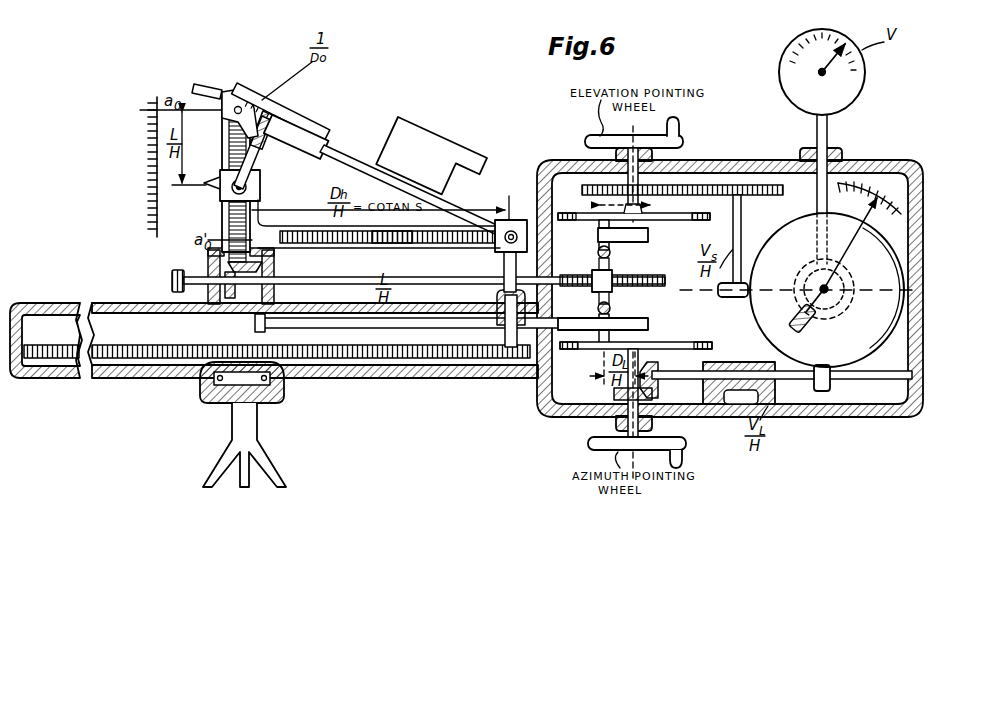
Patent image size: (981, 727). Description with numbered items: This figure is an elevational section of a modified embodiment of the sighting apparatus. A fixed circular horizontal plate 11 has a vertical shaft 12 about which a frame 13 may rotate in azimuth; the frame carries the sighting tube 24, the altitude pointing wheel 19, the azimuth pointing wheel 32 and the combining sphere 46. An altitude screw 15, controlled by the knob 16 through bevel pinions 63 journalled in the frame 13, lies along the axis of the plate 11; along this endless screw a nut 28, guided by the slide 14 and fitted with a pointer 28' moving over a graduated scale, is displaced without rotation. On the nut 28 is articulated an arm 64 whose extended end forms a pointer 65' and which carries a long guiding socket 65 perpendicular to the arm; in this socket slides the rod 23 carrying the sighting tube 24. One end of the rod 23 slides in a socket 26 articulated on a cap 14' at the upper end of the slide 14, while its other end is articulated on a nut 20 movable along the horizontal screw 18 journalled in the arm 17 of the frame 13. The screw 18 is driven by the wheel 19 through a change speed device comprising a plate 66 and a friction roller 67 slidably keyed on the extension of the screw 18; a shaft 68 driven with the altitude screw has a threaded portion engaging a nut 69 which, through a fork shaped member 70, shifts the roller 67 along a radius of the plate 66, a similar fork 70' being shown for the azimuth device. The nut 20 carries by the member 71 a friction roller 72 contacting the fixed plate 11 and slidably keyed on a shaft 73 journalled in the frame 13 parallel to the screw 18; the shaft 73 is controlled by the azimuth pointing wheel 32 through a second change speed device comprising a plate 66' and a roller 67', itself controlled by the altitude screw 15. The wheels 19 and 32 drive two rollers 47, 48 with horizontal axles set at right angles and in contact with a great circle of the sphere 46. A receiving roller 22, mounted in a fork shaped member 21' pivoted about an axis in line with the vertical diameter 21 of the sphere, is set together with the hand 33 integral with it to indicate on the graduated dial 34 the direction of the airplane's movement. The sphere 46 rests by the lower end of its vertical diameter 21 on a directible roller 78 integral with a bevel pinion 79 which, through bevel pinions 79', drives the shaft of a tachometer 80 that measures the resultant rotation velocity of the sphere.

The fixed circular horizontal plate 11 is at (118, 348).
The vertical shaft 12 is at (248, 442).
The frame 13 is at (104, 304).
The slide 14 is at (195, 174).
The cap 14' is at (279, 86).
The altitude screw 15 is at (232, 140).
The knob 16 is at (170, 281).
The arm 17 is at (418, 244).
The horizontal screw 18 is at (386, 234).
The altitude pointing wheel 19 is at (586, 141).
The nut 20 is at (504, 220).
The vertical diameter 21 is at (827, 290).
The fork shaped member 21' is at (804, 301).
The receiving roller 22 is at (800, 322).
The rod 23 is at (352, 163).
The sighting tube 24 is at (414, 130).
The socket 26 is at (238, 96).
The nut 28 is at (255, 184).
The pointer 28' is at (211, 198).
The azimuth pointing wheel 32 is at (590, 443).
The hand 33 is at (860, 230).
The graduated dial 34 is at (860, 206).
The combining sphere 46 is at (902, 290).
The roller 47 is at (732, 298).
The roller 48 is at (832, 379).
The bevel pinions 63 is at (262, 282).
The arm 64 is at (260, 142).
The guiding socket 65 is at (318, 132).
The pointer 65' is at (294, 107).
The plate 66 is at (670, 202).
The plate 66' is at (636, 334).
The friction roller 67 is at (610, 245).
The roller 67' is at (615, 321).
The shaft 68 is at (322, 279).
The nut 69 is at (612, 274).
The fork shaped member 70 is at (633, 249).
The coupling 70' is at (594, 302).
The member 71 is at (506, 272).
The friction roller 72 is at (511, 347).
The shaft 73 is at (340, 328).
The directible roller 78 is at (846, 270).
The bevel pinion 79 is at (839, 299).
The bevel pinions 79' is at (793, 257).
The tachometer 80 is at (848, 89).